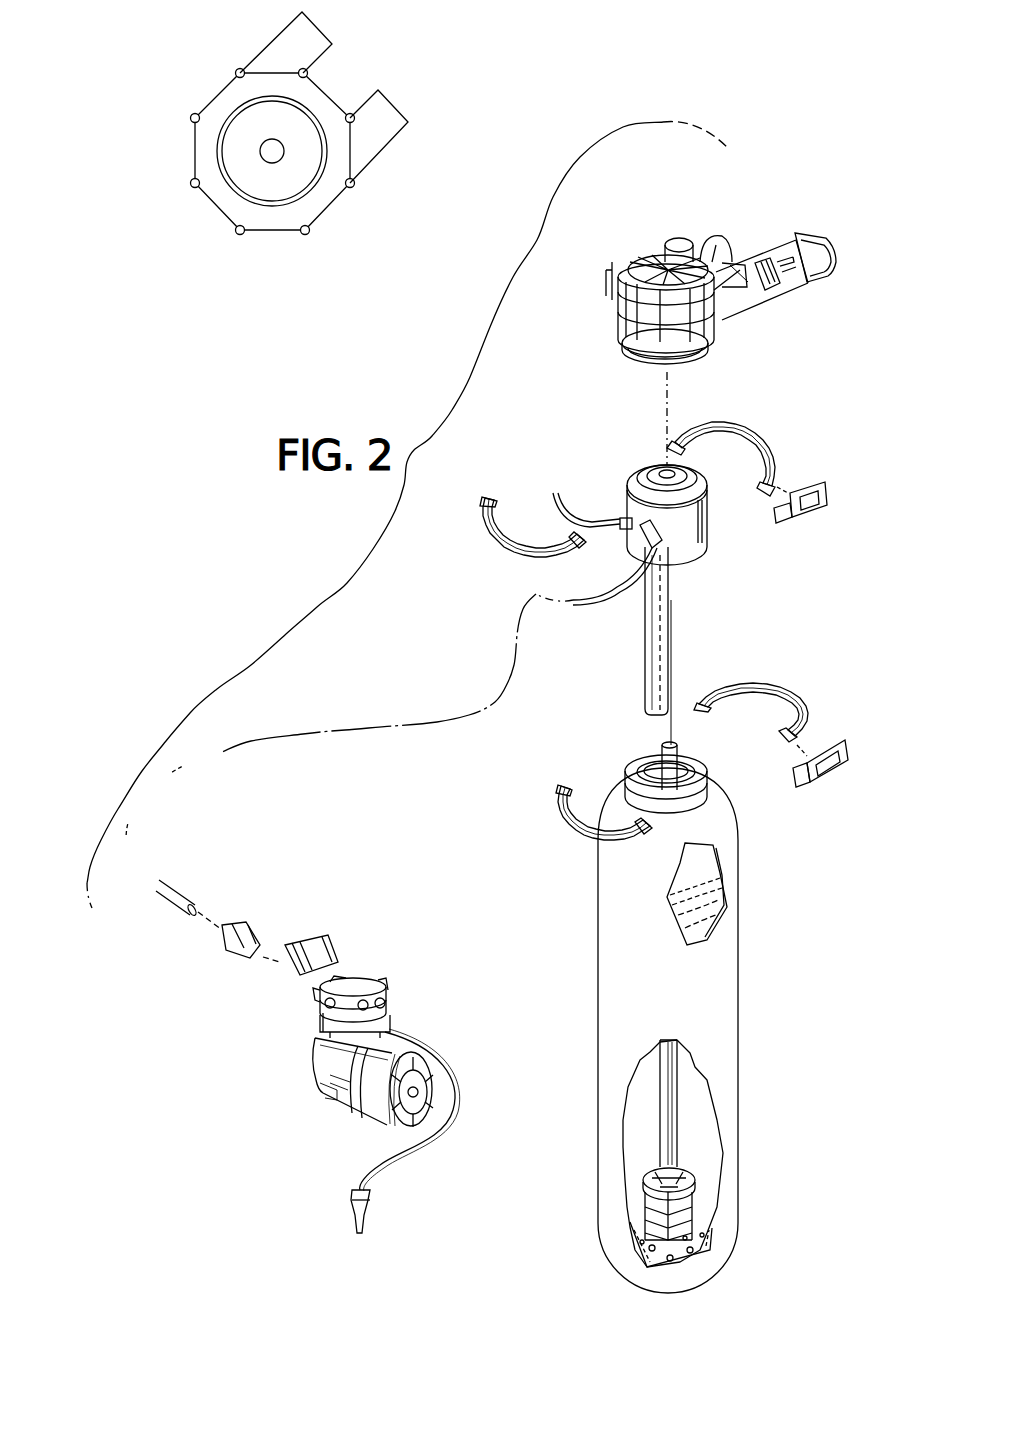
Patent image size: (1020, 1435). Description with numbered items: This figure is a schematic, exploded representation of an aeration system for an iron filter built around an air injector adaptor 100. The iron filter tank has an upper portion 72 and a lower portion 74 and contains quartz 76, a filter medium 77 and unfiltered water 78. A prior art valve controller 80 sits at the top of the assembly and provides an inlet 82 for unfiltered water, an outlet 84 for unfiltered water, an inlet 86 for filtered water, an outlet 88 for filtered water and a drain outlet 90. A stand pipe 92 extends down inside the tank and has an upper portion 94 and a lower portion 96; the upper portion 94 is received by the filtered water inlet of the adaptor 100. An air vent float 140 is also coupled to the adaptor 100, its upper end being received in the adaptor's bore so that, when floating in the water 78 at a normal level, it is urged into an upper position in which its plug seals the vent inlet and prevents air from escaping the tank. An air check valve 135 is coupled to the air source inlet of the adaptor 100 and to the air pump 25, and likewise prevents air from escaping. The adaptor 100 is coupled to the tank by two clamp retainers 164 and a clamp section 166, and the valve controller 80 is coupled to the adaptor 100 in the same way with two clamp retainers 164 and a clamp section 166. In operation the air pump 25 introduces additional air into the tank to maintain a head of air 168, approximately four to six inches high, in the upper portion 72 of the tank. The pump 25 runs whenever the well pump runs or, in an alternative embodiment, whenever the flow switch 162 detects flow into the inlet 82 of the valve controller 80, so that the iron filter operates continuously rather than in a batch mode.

The air pump 25 is at (410, 997).
The upper portion 72 is at (745, 825).
The lower portion 74 is at (607, 1155).
The quartz 76 is at (713, 1233).
The filter medium 77 is at (690, 1133).
The unfiltered water 78 is at (708, 915).
The valve controller 80 is at (185, 88).
The inlet for unfiltered water 82 is at (280, 47).
The outlet for unfiltered water 84 is at (238, 167).
The inlet for filtered water 86 is at (278, 157).
The outlet for filtered water 88 is at (387, 133).
The drain outlet 90 is at (763, 290).
The stand pipe 92 is at (665, 1072).
The upper portion 94 is at (647, 773).
The lower portion 96 is at (663, 1138).
The adaptor 100 is at (710, 523).
The air check valve 135 is at (640, 520).
The air vent float 140 is at (652, 642).
The flow switch 162 is at (832, 262).
The clamp retainers 164 is at (755, 425).
The clamp section 166 is at (830, 476).
The head of air 168 is at (700, 868).